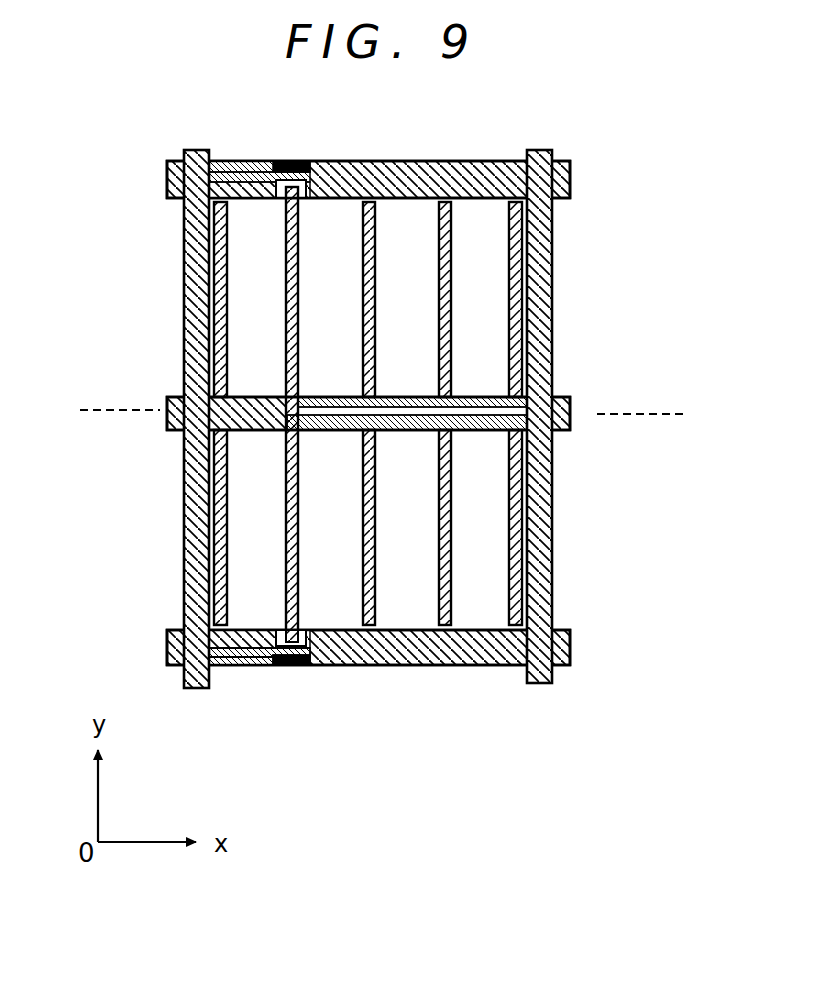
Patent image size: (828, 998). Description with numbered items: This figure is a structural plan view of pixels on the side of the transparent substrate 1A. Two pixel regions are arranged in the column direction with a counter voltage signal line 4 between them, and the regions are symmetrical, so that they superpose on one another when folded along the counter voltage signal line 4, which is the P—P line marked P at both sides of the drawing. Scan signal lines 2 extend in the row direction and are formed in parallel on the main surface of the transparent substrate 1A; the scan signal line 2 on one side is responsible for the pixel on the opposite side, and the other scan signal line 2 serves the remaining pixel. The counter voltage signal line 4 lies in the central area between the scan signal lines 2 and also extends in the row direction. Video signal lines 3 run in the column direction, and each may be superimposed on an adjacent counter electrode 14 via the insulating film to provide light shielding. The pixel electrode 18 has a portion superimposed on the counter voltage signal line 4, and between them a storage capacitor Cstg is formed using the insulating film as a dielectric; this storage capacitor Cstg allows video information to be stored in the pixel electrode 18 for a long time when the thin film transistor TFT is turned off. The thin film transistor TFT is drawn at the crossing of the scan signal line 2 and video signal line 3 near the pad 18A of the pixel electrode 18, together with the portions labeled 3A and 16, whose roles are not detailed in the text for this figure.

The transparent substrate 1A is at (570, 557).
The scan signal line 2 is at (572, 180).
The video signal line 3 is at (553, 240).
The gate electrode 3A is at (298, 667).
The counter voltage signal line 4 is at (344, 404).
The counter electrode 14 is at (217, 493).
The semiconductor layer 16 is at (330, 666).
The pixel electrode 18 is at (287, 513).
The contact portion of drain electrode 18A is at (283, 612).
The storage capacitor Cstg is at (314, 444).
The thin film transistor TFT is at (314, 725).
The P—P line P is at (378, 413).